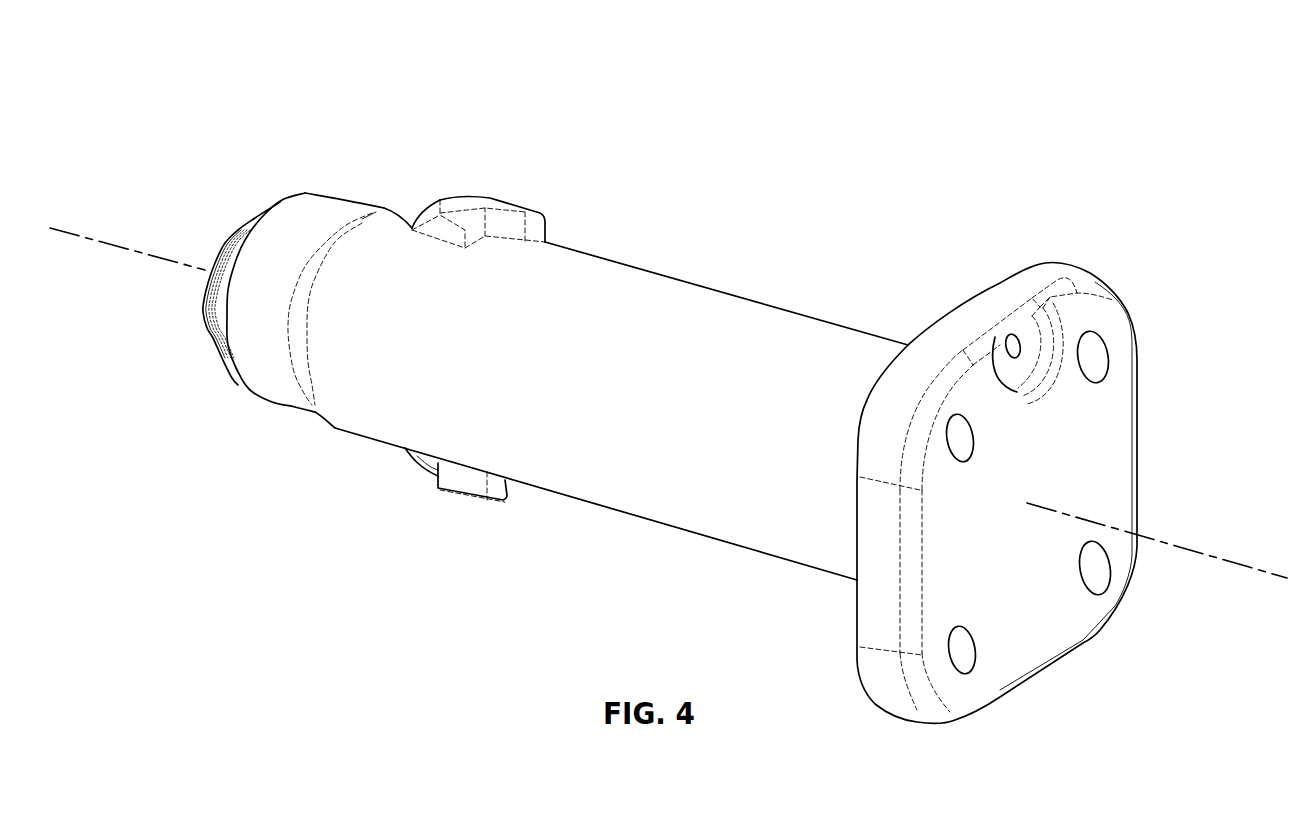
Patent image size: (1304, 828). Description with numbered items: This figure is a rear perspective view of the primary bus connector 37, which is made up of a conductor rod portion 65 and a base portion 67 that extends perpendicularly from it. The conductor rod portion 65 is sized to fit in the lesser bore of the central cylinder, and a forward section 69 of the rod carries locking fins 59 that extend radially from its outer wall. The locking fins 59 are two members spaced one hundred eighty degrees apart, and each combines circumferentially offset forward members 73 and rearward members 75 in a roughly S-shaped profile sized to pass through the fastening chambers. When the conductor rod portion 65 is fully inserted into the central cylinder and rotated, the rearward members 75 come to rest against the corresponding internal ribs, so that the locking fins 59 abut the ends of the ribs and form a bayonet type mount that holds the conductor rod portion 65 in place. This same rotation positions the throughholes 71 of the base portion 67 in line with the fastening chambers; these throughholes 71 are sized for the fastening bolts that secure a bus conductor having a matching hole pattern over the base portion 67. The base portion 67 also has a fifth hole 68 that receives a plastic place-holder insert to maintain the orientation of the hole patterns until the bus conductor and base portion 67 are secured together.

The primary bus connector 37 is at (668, 377).
The locking fins 59 is at (470, 200).
The conductor rod portion 65 is at (762, 274).
The base portion 67 is at (1026, 463).
The fifth hole 68 is at (1012, 335).
The forward section 69 is at (555, 348).
The throughholes 71 is at (1095, 357).
The forward members 73 is at (438, 205).
The rearward members 75 is at (522, 210).